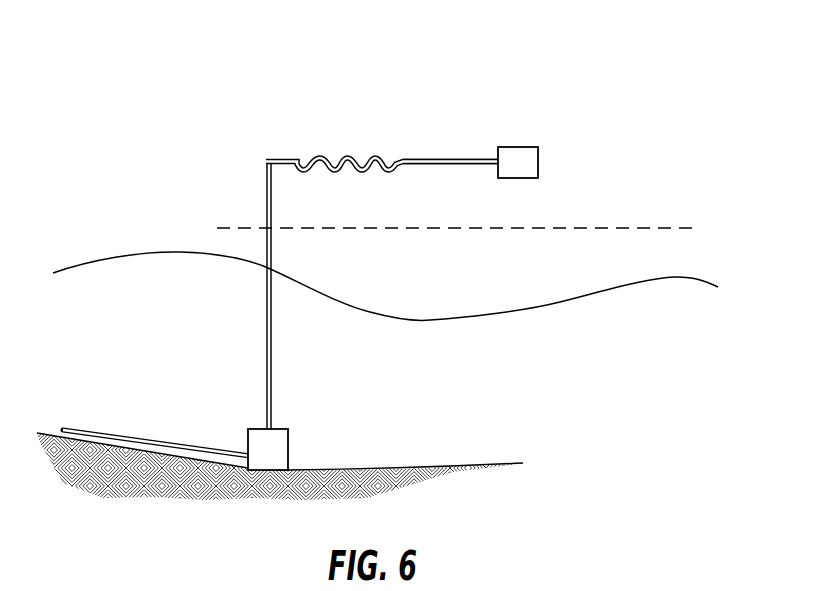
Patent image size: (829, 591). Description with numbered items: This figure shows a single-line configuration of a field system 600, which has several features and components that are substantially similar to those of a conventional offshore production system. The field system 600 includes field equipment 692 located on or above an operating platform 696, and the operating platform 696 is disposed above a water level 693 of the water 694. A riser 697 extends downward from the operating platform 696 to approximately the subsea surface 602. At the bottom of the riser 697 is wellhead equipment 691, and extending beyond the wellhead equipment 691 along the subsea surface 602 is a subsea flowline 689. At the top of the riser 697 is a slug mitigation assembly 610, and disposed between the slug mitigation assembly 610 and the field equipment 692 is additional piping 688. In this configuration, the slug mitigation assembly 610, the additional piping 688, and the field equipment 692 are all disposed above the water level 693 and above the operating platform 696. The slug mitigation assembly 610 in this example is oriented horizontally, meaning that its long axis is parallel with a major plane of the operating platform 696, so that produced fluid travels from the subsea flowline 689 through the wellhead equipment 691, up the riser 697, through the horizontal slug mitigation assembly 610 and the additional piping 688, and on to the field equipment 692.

The field system 600 is at (122, 48).
The subsea surface 602 is at (440, 465).
The slug mitigation assembly 610 is at (333, 142).
The additional piping 688 is at (437, 160).
The field equipment 692 is at (527, 120).
The operating platform 696 is at (587, 228).
The water level 693 is at (682, 273).
The water 694 is at (535, 370).
The riser 697 is at (273, 340).
The subsea flowline 689 is at (83, 427).
The wellhead equipment 691 is at (238, 415).